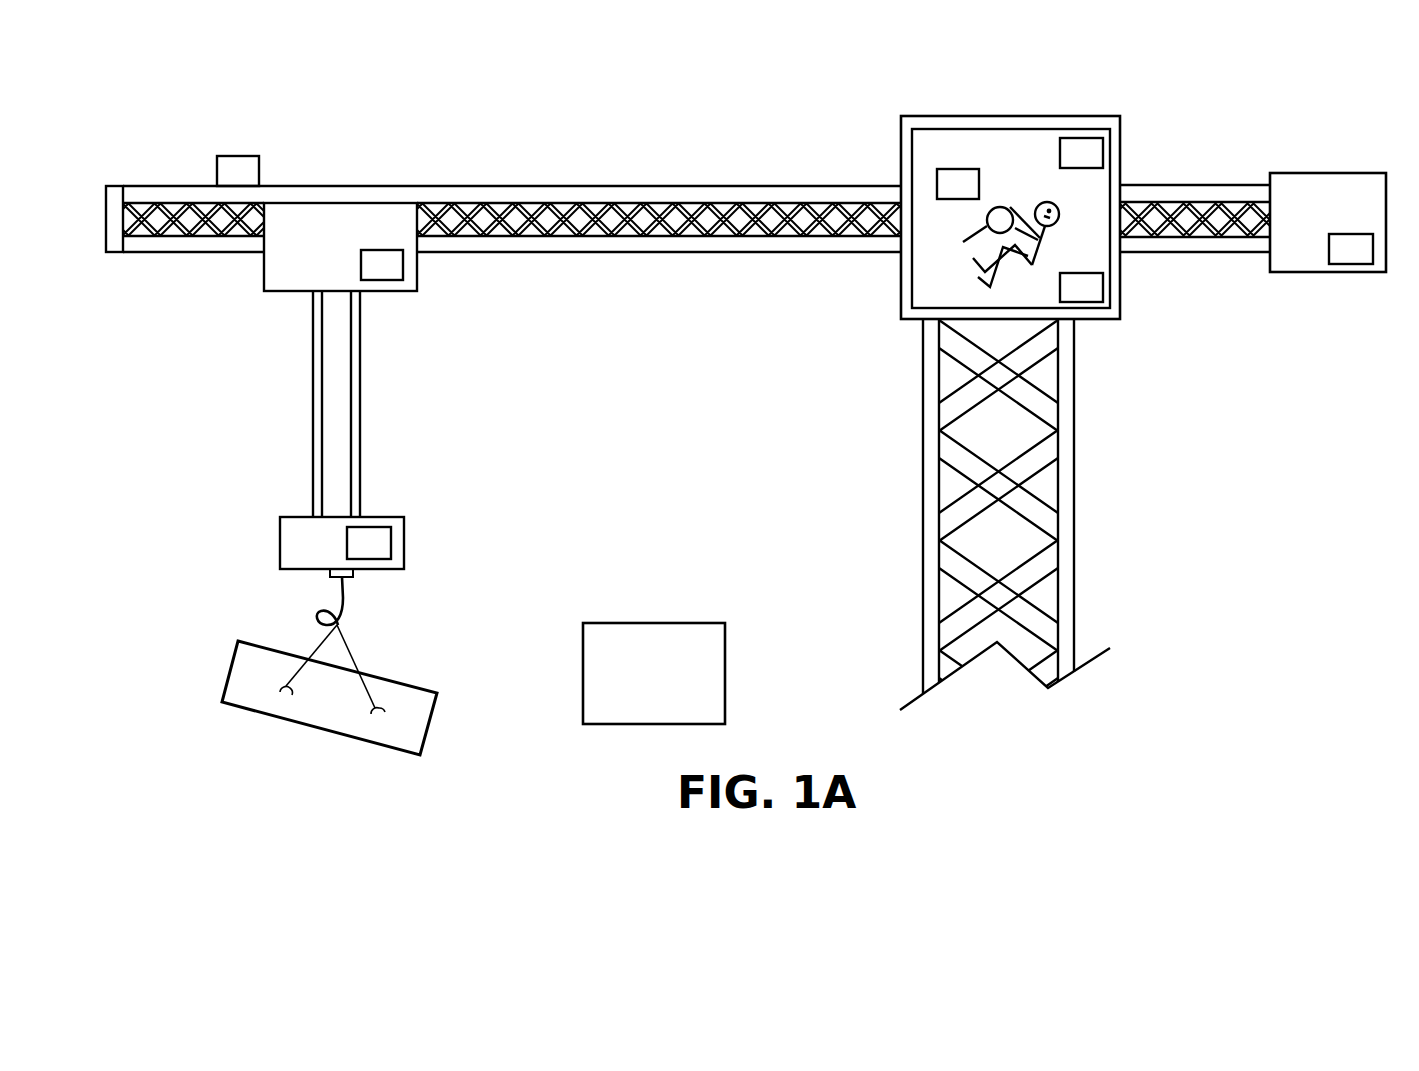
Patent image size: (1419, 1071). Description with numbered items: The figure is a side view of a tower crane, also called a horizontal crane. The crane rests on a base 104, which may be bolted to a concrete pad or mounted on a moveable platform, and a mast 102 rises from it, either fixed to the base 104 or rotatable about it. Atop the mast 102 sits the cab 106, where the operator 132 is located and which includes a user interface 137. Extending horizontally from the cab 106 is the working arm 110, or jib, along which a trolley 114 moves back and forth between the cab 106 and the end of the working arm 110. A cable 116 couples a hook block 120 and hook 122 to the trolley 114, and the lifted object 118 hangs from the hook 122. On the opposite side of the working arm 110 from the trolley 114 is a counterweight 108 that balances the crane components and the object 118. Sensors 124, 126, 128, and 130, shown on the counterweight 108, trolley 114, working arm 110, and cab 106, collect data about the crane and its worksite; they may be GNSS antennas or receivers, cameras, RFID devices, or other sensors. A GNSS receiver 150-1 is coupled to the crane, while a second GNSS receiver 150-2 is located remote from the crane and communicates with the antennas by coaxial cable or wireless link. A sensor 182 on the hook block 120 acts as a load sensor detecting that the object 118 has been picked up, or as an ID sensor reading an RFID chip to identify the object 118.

The mast 102 is at (1074, 525).
The base 104 is at (1093, 660).
The cab 106 is at (1123, 128).
The counterweight 108 is at (1287, 175).
The working arm 110 is at (130, 186).
The trolley 114 is at (322, 217).
The cable 116 is at (310, 400).
The object 118 is at (238, 660).
The hook block 120 is at (279, 540).
The hook 122 is at (350, 612).
The sensor 124 is at (1357, 245).
The sensor 126 is at (380, 265).
The sensor 128 is at (233, 156).
The sensor 130 is at (1082, 148).
The operator 132 is at (1037, 198).
The user interface 137 is at (955, 170).
The GNSS receiver 150-1 is at (1088, 292).
The GNSS receiver 150-2 is at (654, 673).
The sensor 182 is at (367, 545).